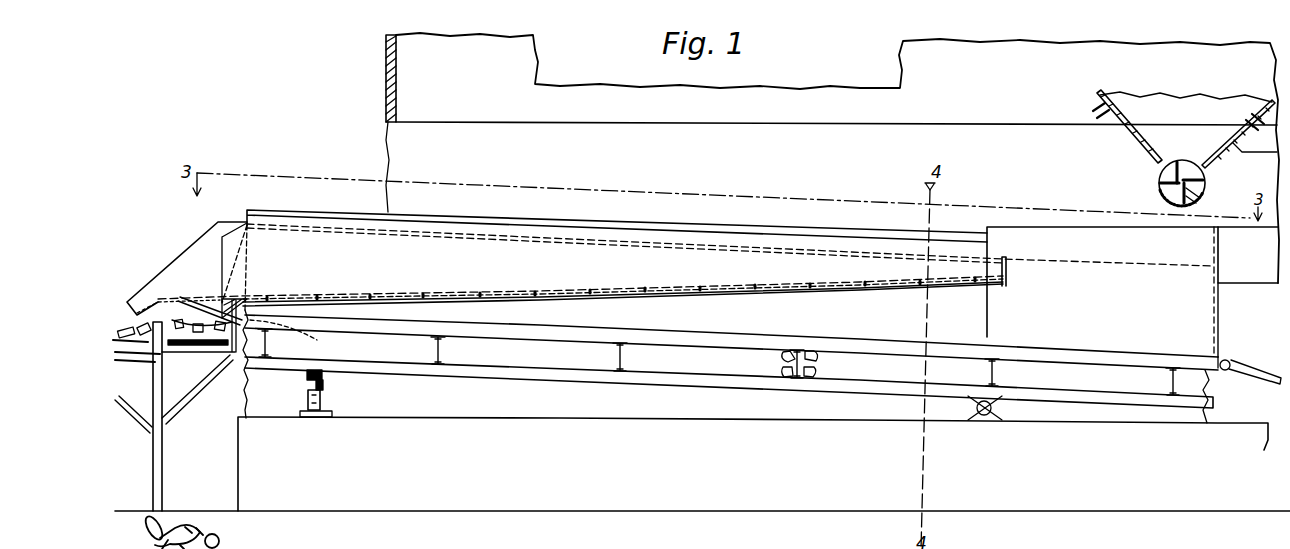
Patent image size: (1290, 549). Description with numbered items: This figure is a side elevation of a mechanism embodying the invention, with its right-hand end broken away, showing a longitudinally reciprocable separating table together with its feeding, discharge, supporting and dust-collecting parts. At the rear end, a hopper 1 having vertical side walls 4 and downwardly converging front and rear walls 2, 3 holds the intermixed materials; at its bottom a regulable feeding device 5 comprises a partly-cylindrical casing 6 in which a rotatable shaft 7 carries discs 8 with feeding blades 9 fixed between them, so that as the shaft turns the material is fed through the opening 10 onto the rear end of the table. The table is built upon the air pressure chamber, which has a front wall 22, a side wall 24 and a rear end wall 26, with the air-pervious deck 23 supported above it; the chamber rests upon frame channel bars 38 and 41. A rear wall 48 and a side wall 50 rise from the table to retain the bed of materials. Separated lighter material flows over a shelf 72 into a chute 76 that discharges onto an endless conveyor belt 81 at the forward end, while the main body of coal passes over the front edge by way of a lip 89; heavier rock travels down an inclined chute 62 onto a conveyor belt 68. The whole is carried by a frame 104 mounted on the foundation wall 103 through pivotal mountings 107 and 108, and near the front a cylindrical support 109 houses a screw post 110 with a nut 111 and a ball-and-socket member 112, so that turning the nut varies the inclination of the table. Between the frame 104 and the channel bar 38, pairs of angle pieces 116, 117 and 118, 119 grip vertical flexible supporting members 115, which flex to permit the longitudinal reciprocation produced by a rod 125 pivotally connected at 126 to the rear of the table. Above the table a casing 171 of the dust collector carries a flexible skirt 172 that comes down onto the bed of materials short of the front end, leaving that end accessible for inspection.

The hopper 1 is at (1240, 100).
The front wall 2 is at (1122, 133).
The rear wall 3 is at (1245, 135).
The vertical side wall 4 is at (1168, 110).
The regulable feeding device 5 is at (1204, 176).
The casing 6 is at (1163, 198).
The rotatable shaft 7 is at (1160, 182).
The disc 8 is at (1203, 189).
The feeding blade 9 is at (1179, 164).
The opening 10 is at (1158, 167).
The front wall 22 is at (248, 283).
The air-pervious deck 23 is at (703, 243).
The side wall 24 is at (1160, 309).
The rear end wall 26 is at (1222, 338).
The frame channel bar 38 is at (683, 319).
The frame channel bar 41 is at (304, 340).
The rear end wall 48 is at (1222, 256).
The side wall 50 is at (1040, 238).
The inclined chute 62 is at (177, 255).
The conveyor belt 68 is at (118, 330).
The shelf 72 is at (552, 222).
The chute 76 is at (511, 275).
The endless conveyor belt 81 is at (188, 323).
The lip 89 is at (237, 327).
The foundation wall 103 is at (560, 428).
The frame 104 is at (572, 375).
The pivotal mounting 107 is at (985, 415).
The pivotal mounting 108 is at (1000, 406).
The cylindrical support 109 is at (330, 406).
The screw post 110 is at (325, 389).
The nut 111 is at (306, 399).
The member 112 is at (305, 376).
The flexible supporting member 115 is at (267, 340).
The angle piece 116 is at (784, 377).
The angle piece 117 is at (810, 379).
The angle piece 118 is at (790, 348).
The angle piece 119 is at (823, 349).
The rod 125 is at (1265, 381).
The pivotal connection 126 is at (1230, 362).
The casing 171 is at (385, 87).
The flexible skirt 172 is at (386, 143).